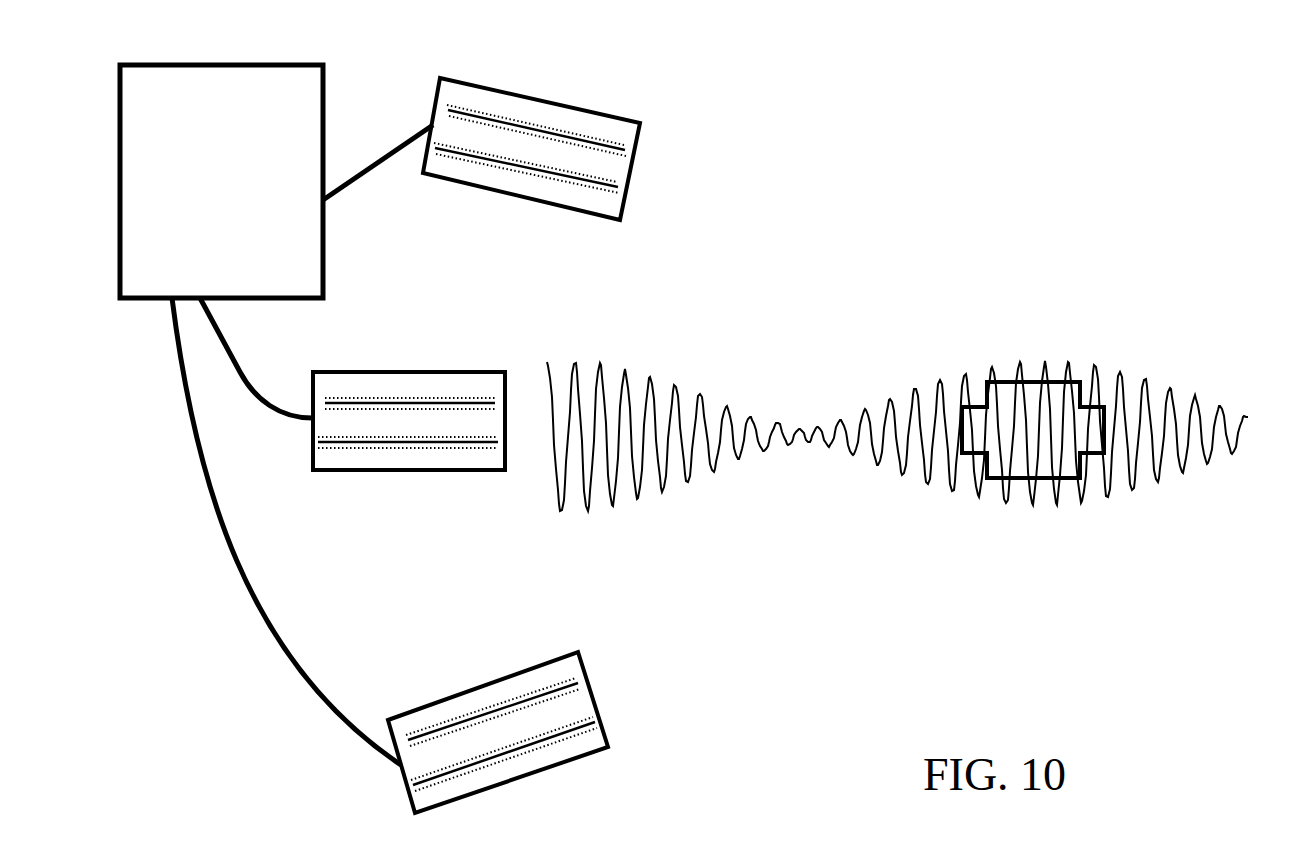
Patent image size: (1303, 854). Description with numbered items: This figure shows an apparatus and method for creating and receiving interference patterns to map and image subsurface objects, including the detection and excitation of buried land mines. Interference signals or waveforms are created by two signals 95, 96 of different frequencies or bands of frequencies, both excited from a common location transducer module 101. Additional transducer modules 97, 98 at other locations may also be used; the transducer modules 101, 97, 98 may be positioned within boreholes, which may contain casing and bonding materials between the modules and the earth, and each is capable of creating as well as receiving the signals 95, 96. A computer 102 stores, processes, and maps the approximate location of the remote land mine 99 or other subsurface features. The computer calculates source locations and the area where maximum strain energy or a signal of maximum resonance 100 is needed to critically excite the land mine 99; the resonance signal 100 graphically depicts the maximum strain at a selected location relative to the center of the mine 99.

The signal 95 is at (398, 450).
The signal 96 is at (363, 390).
The transducer module 97 is at (620, 118).
The transducer module 98 is at (585, 753).
The land mine 99 is at (1073, 478).
The resonance signal 100 is at (1020, 360).
The transducer module 101 is at (443, 372).
The computer 102 is at (323, 105).